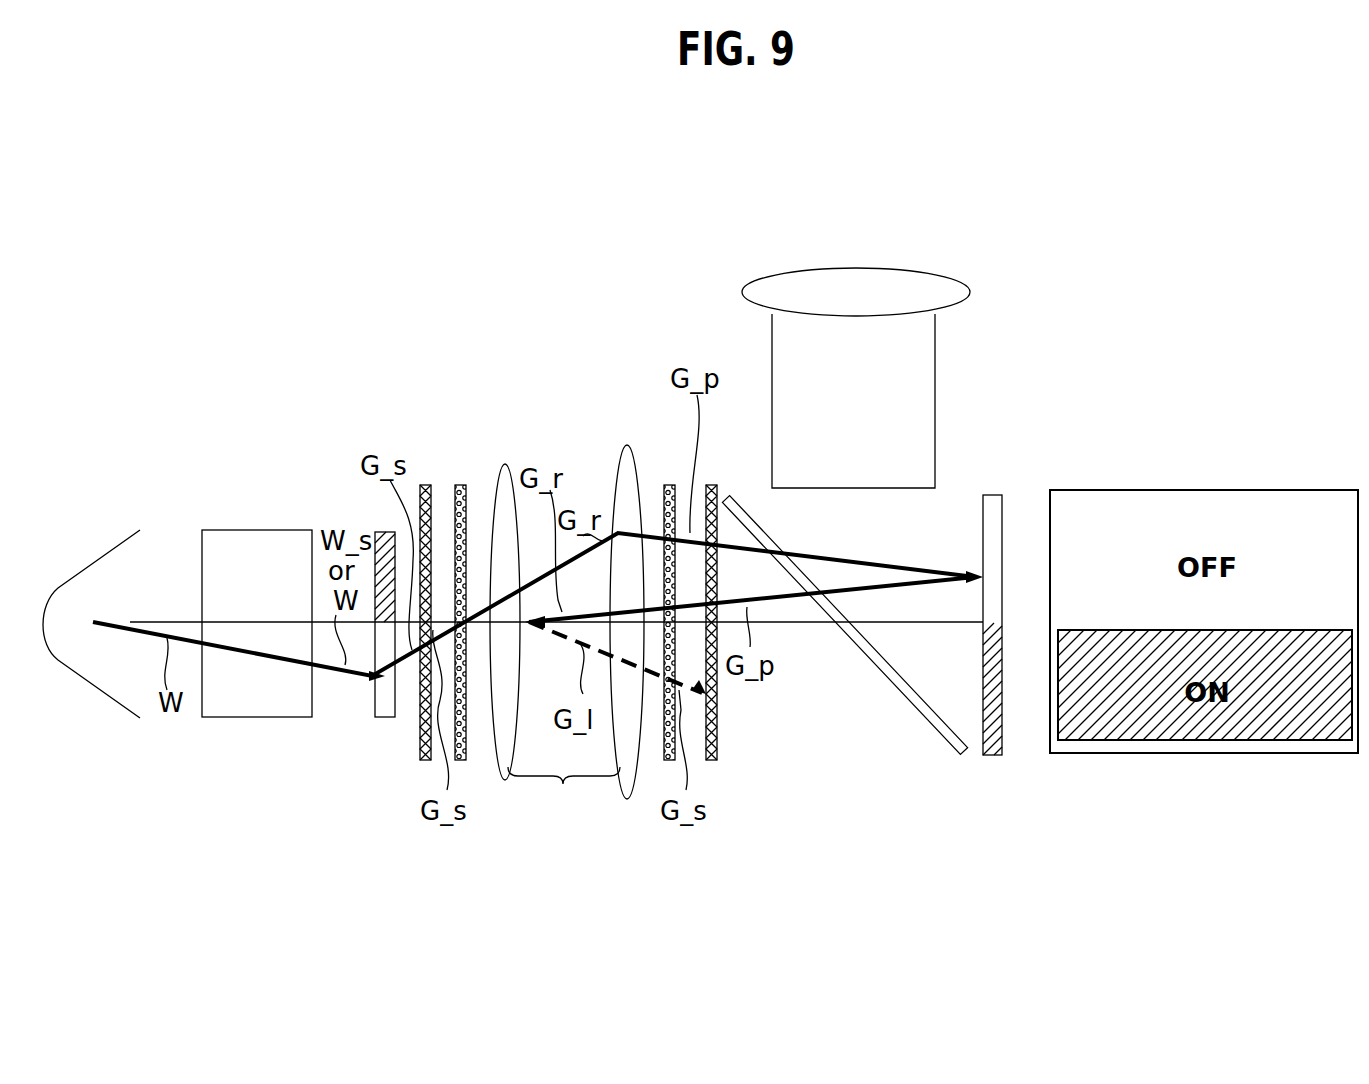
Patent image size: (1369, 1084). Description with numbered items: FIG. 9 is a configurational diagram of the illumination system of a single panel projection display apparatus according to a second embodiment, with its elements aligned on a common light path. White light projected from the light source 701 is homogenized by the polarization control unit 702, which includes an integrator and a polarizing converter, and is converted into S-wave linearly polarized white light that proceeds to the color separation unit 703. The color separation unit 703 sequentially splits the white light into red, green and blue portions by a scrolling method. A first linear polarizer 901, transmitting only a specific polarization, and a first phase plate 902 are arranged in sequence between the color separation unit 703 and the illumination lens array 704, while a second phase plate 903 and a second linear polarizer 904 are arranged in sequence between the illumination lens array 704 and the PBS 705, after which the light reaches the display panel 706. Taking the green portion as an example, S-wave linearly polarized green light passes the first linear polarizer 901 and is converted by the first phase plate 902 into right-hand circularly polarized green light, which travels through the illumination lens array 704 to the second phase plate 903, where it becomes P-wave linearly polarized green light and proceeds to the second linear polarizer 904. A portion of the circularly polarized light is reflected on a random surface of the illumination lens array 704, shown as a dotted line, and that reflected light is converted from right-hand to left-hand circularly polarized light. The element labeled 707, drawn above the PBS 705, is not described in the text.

The light source 701 is at (97, 550).
The polarization control unit 702 is at (250, 530).
The color separation unit 703 is at (383, 720).
The illumination lens array 704 is at (567, 635).
The PBS 705 is at (940, 733).
The display panel 706 is at (993, 495).
The projection lens 707 is at (970, 292).
The first linear polarizer 901 is at (424, 485).
The first phase plate 902 is at (462, 485).
The second phase plate 903 is at (669, 485).
The second linear polarizer 904 is at (712, 485).